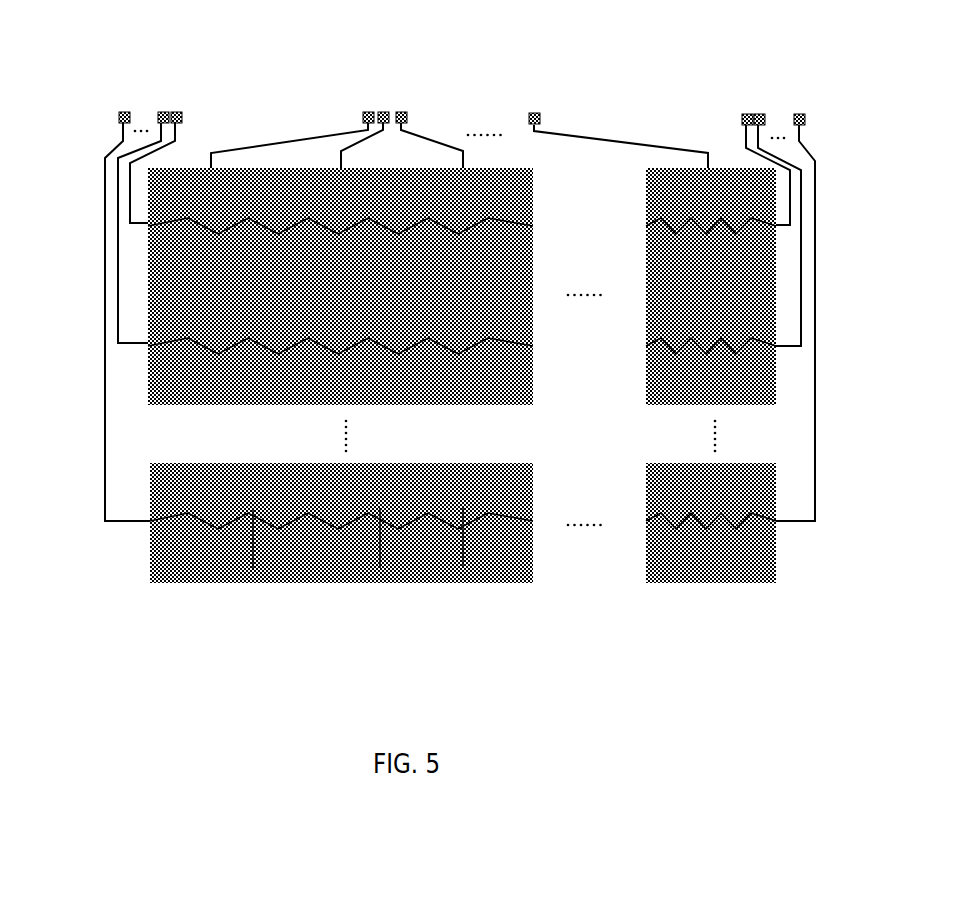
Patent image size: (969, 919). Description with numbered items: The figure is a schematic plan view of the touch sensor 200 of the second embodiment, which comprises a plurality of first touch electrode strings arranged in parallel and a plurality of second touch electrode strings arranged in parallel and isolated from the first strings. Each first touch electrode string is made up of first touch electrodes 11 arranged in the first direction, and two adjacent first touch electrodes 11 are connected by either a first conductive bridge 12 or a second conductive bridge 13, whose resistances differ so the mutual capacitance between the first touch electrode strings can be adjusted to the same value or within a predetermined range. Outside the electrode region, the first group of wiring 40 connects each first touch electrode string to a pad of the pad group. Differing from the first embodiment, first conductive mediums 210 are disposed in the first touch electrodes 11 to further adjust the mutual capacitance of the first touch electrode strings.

The touch sensor 200 is at (372, 55).
The first group of wiring 40 is at (97, 342).
The second conductive bridge 13 is at (753, 293).
The first touch electrode 11 is at (245, 535).
The first conductive bridge 12 is at (453, 522).
The first conductive medium 210 is at (295, 517).